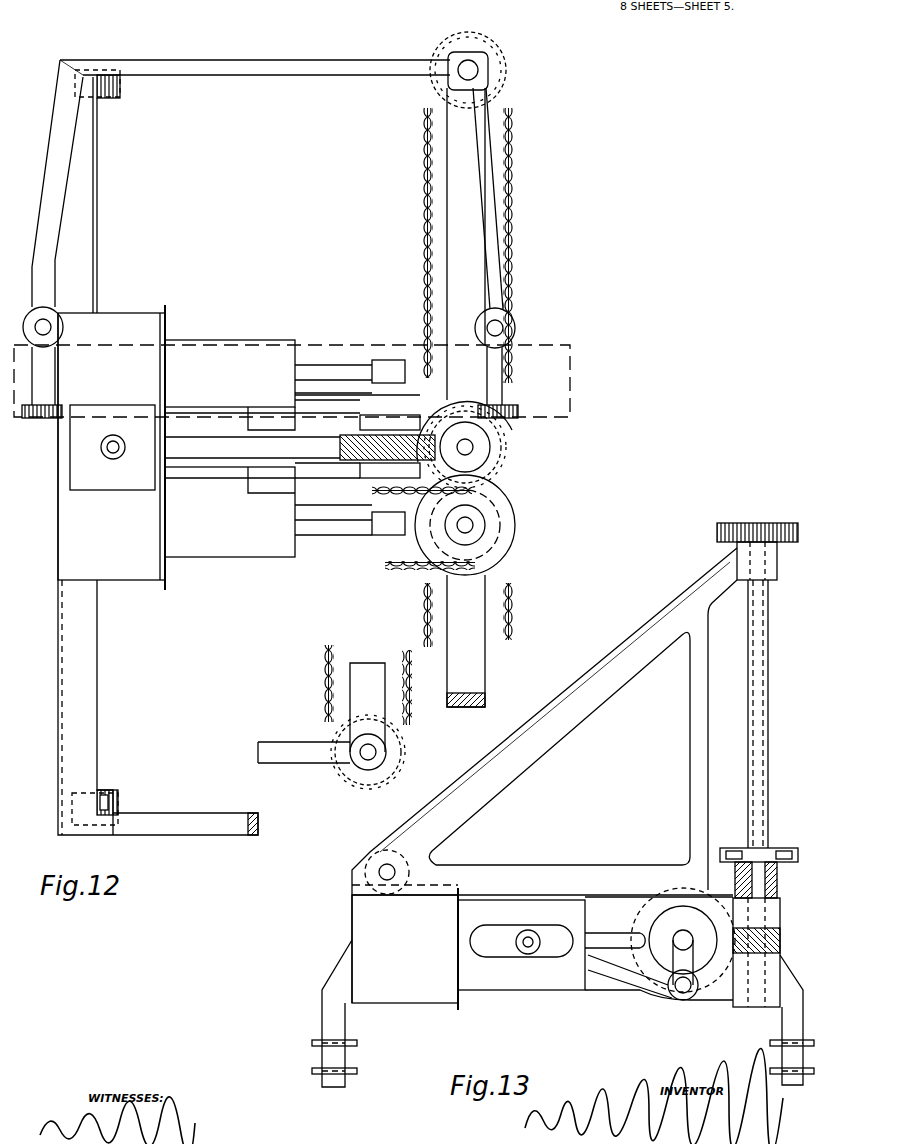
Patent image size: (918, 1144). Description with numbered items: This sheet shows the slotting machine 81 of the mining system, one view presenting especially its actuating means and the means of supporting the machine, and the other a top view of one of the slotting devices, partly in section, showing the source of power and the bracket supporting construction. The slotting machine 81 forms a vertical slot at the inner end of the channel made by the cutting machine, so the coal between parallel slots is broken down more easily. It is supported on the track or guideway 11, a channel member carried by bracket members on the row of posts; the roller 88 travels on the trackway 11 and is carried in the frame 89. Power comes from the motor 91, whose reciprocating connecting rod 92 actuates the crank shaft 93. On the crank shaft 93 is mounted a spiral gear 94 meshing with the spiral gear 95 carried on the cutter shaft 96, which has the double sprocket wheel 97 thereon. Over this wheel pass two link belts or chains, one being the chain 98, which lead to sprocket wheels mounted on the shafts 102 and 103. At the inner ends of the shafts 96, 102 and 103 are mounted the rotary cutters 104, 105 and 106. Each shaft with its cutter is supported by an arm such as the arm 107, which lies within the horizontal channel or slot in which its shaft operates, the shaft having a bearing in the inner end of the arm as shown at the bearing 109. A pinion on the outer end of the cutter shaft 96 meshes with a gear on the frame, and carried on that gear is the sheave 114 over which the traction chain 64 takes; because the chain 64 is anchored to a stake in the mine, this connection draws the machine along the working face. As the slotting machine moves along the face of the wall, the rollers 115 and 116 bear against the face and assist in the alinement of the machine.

In FIG. 12, the track or guideway 11 is at (555, 372).
In FIG. 12, the traction chain 64 is at (398, 570).
In FIG. 12, the slotting machine 81 is at (254, 447).
In FIG. 13, the slotting machine 81 is at (544, 775).
In FIG. 12, the roller 88 is at (65, 318).
In FIG. 13, the roller 88 is at (347, 1062).
In FIG. 12, the frame 89 is at (48, 233).
In FIG. 13, the frame 89 is at (322, 1018).
In FIG. 12, the motor 91 is at (111, 447).
In FIG. 13, the motor 91 is at (405, 949).
In FIG. 12, the reciprocating connecting rod 92 is at (325, 378).
In FIG. 13, the reciprocating connecting rod 92 is at (622, 972).
In FIG. 12, the crank shaft 93 is at (392, 538).
In FIG. 13, the crank shaft 93 is at (680, 945).
In FIG. 12, the spiral gear 94 is at (340, 449).
In FIG. 12, the spiral gear 95 is at (480, 447).
In FIG. 13, the spiral gear 95 is at (772, 952).
In FIG. 12, the cutter shaft 96 is at (470, 450).
In FIG. 13, the cutter shaft 96 is at (768, 790).
In FIG. 13, the double sprocket wheel 97 is at (780, 848).
In FIG. 12, the link belt or chain 98 is at (424, 287).
In FIG. 12, the shaft 102 is at (478, 70).
In FIG. 12, the shaft 103 is at (376, 752).
In FIG. 12, the rotary cutter 104 is at (498, 52).
In FIG. 12, the rotary cutter 105 is at (495, 470).
In FIG. 13, the rotary cutter 105 is at (758, 523).
In FIG. 12, the rotary cutter 106 is at (394, 775).
In FIG. 13, the arm 107 is at (568, 680).
In FIG. 13, the bearing 109 is at (790, 568).
In FIG. 12, the sheave 114 is at (500, 535).
In FIG. 12, the roller 115 is at (118, 800).
In FIG. 13, the roller 115 is at (372, 860).
In FIG. 12, the roller 116 is at (120, 92).